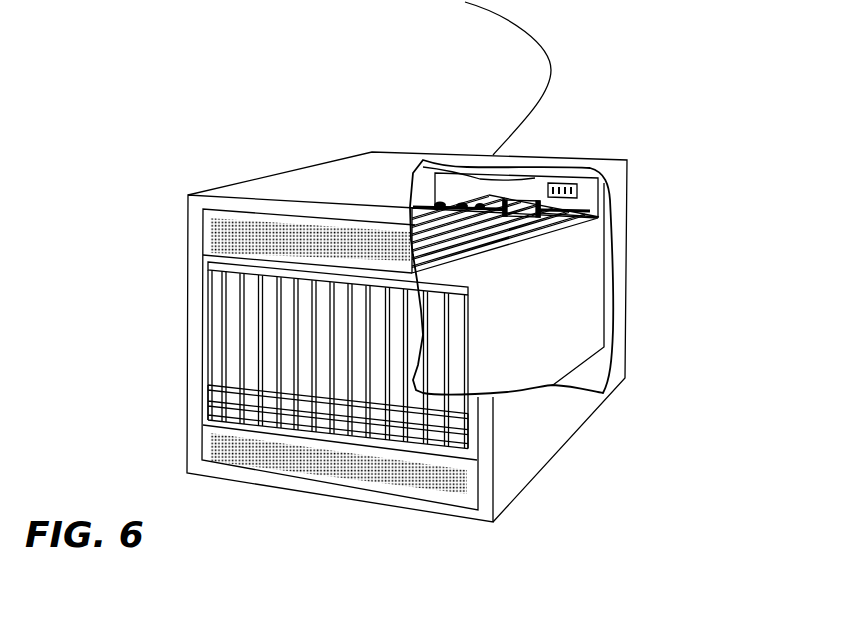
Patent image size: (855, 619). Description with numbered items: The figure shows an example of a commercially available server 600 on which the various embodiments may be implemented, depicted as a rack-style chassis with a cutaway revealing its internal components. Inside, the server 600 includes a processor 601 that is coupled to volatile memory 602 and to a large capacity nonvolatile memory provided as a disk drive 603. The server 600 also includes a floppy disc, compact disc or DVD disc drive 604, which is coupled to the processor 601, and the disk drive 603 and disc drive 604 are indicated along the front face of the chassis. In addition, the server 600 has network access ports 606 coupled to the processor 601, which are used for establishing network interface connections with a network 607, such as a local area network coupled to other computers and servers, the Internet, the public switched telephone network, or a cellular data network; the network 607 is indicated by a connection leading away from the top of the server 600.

The server 600 is at (297, 171).
The processor 601 is at (537, 178).
The volatile memory 602 is at (580, 207).
The disk drive 603 is at (255, 313).
The disc drive 604 is at (233, 357).
The network access ports 606 is at (410, 177).
The network 607 is at (547, 95).